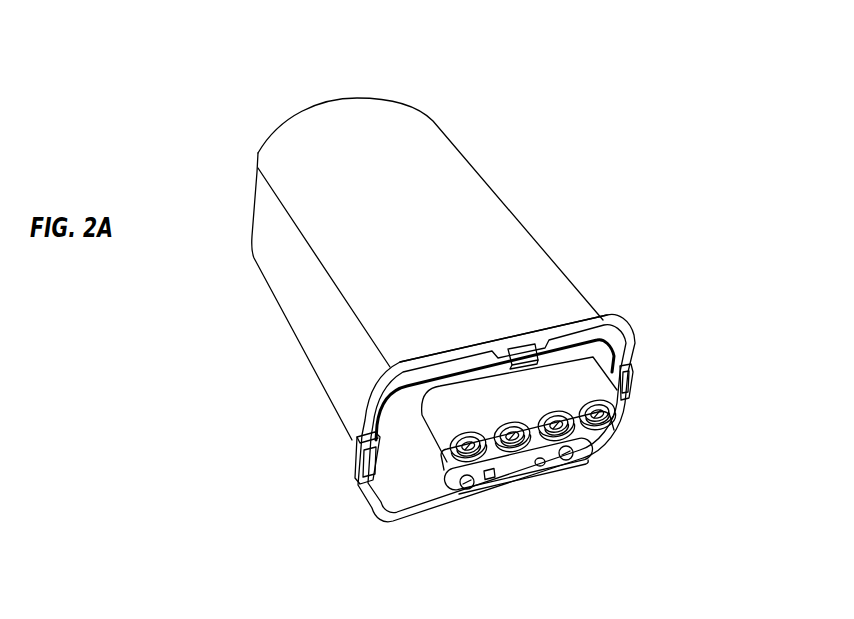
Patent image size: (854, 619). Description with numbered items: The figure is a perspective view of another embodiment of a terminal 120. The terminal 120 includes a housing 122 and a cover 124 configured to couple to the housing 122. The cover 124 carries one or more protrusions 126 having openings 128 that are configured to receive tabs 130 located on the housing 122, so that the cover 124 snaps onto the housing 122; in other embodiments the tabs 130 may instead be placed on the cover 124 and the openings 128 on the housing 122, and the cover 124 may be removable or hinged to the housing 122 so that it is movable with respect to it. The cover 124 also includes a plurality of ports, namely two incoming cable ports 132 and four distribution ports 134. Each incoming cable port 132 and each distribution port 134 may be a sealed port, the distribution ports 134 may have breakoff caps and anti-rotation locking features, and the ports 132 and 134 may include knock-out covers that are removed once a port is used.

The terminal 120 is at (297, 66).
The housing 122 is at (422, 135).
The cover 124 is at (613, 358).
The protrusions 126 is at (536, 348).
The openings 128 is at (548, 342).
The tabs 130 is at (528, 350).
The incoming cable ports 132 is at (497, 478).
The distribution ports 134 is at (562, 436).